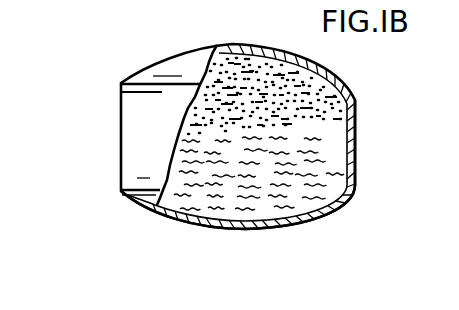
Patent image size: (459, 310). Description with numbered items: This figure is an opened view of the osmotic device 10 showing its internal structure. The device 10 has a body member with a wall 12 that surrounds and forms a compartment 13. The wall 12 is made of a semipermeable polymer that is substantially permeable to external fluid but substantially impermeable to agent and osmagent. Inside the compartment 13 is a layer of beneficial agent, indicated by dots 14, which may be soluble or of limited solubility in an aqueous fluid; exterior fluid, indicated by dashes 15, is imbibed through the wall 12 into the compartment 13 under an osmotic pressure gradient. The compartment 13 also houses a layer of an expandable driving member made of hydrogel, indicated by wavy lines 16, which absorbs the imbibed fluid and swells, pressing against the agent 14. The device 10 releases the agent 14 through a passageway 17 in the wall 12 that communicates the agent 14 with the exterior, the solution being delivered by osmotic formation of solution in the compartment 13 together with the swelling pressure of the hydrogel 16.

The osmotic device 10 is at (95, 177).
The wall 12 is at (351, 153).
The compartment 13 is at (334, 131).
The beneficial agent 14 is at (330, 99).
The exterior fluid 15 is at (312, 86).
The hydrogel 16 is at (305, 182).
The passageway 17 is at (244, 45).